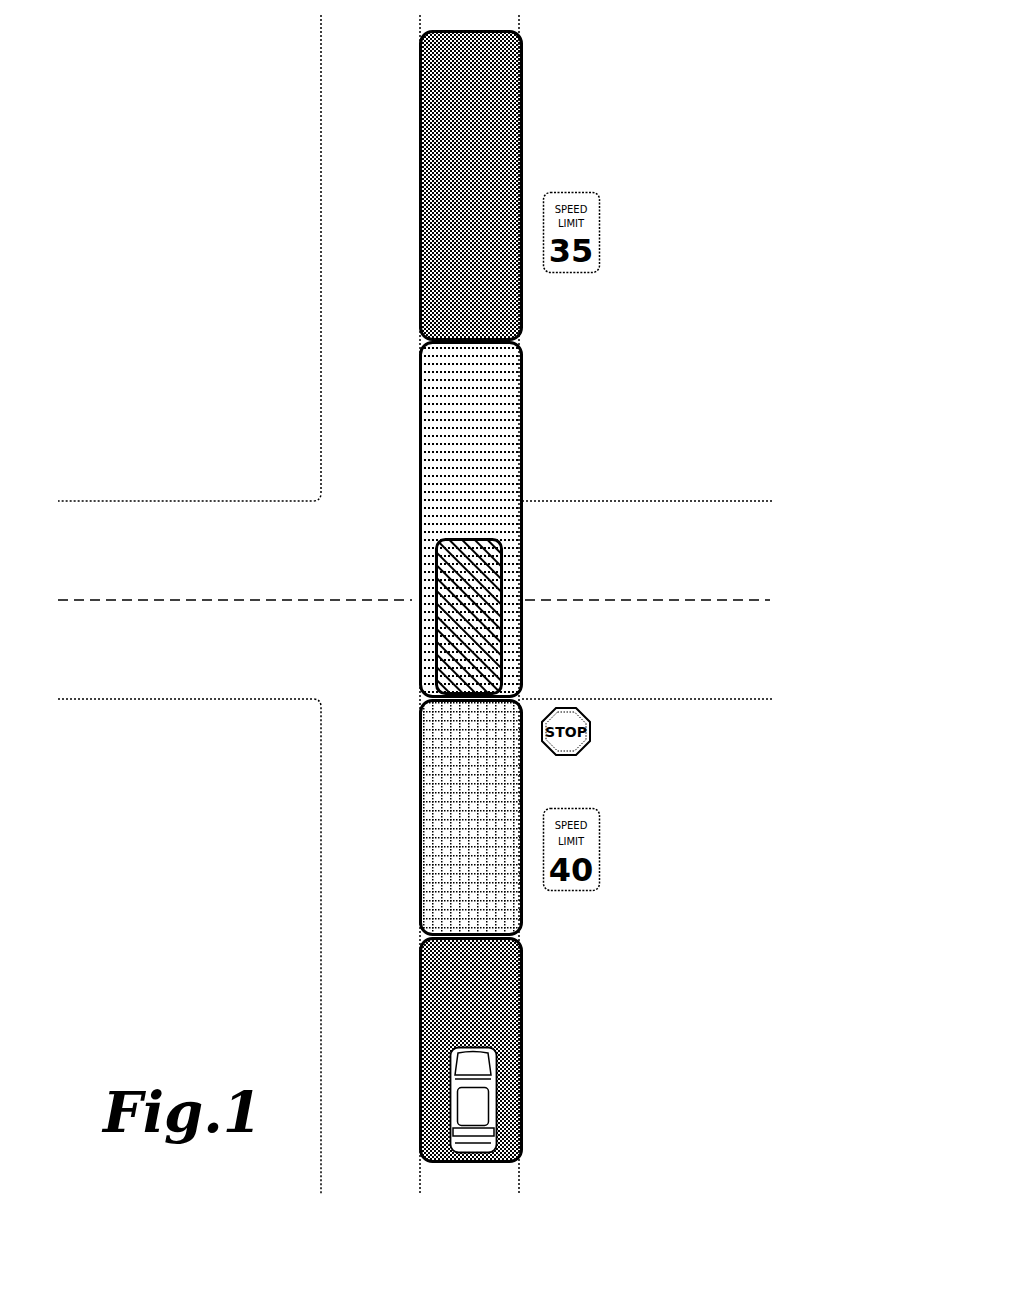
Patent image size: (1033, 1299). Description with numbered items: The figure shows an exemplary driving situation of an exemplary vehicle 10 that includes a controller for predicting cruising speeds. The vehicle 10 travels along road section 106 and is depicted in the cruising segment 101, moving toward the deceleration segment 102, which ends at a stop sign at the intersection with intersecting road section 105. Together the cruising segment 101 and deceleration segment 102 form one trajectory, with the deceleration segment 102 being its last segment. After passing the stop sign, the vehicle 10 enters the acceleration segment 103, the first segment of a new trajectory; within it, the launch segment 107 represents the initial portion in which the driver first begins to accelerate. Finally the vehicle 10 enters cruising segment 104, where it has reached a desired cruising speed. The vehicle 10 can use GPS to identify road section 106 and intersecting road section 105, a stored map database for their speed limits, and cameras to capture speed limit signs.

The vehicle 10 is at (500, 1103).
The cruising segment 101 is at (524, 985).
The deceleration segment 102 is at (510, 773).
The acceleration segment 103 is at (510, 383).
The cruising segment 104 is at (524, 113).
The intersecting road section 105 is at (662, 500).
The road section 106 is at (328, 753).
The launch segment 107 is at (500, 558).